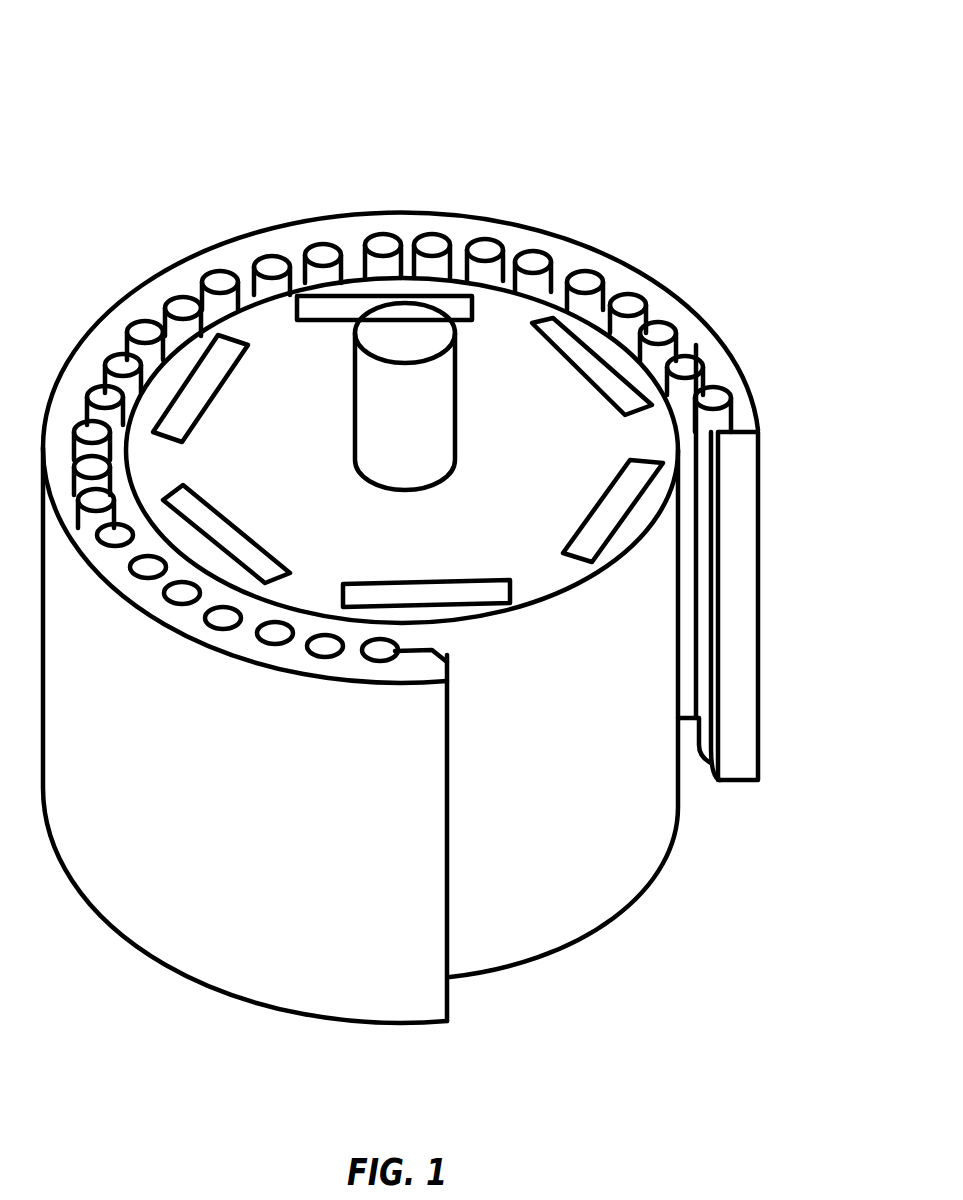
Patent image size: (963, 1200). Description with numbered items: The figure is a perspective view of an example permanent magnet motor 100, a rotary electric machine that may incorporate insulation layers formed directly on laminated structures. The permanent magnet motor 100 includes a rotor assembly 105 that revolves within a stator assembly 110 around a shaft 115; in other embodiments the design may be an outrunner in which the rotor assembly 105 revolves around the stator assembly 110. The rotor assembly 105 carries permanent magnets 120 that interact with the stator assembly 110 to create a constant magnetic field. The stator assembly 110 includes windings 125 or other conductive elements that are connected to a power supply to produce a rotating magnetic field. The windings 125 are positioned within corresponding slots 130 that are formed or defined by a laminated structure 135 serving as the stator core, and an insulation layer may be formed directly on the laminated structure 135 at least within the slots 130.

The permanent magnet motor 100 is at (113, 52).
The rotor assembly 105 is at (527, 885).
The stator assembly 110 is at (767, 544).
The shaft 115 is at (406, 392).
The permanent magnets 120 is at (224, 338).
The windings 125 is at (696, 345).
The slots 130 is at (700, 353).
The laminated structure 135 is at (746, 457).